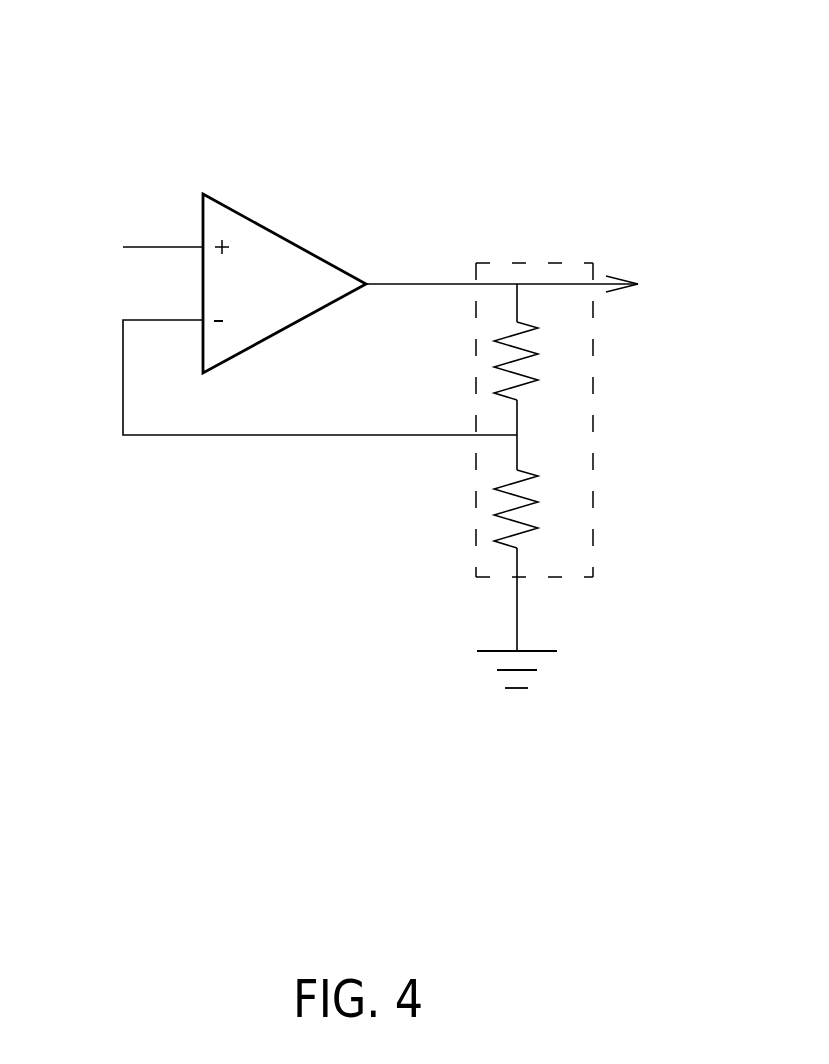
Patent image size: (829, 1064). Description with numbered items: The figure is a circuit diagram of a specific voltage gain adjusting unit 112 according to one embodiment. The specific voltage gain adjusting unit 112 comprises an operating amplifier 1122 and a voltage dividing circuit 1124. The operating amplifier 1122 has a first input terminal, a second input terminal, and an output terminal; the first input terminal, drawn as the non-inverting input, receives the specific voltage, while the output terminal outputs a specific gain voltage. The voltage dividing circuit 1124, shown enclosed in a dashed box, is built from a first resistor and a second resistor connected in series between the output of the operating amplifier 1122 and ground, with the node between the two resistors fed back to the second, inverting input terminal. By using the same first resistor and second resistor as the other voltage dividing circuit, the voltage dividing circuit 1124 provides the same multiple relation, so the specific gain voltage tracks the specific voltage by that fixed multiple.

The specific voltage gain adjusting unit 112 is at (405, 369).
The operating amplifier 1122 is at (287, 238).
The voltage dividing circuit 1124 is at (594, 421).